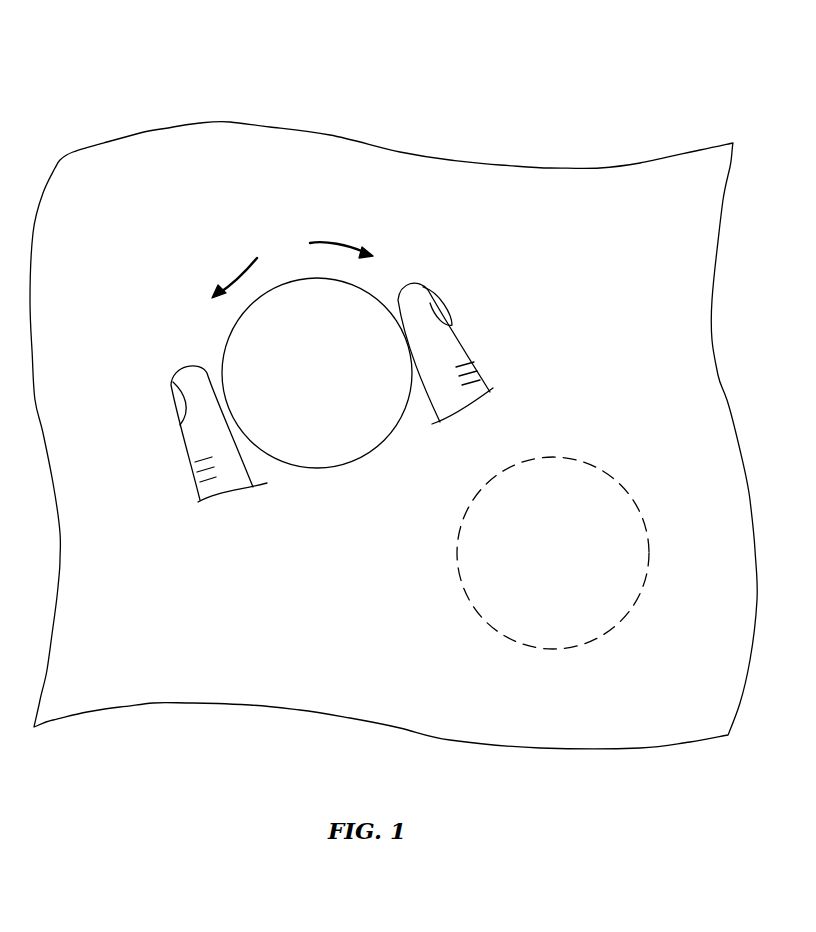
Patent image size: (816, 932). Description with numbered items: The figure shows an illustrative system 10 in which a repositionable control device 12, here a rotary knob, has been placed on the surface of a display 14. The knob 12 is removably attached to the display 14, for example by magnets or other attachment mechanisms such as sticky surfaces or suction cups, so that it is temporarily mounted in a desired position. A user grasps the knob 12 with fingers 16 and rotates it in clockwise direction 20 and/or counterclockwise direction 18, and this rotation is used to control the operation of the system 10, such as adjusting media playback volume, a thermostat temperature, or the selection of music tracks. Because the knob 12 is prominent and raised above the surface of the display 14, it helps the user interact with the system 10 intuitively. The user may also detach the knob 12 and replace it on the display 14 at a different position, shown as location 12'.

The system 10 is at (583, 82).
The repositionable control device 12 is at (317, 350).
The location 12' is at (522, 553).
The display 14 is at (686, 267).
The fingers 16 is at (178, 440).
The counterclockwise direction 18 is at (238, 268).
The clockwise direction 20 is at (340, 243).